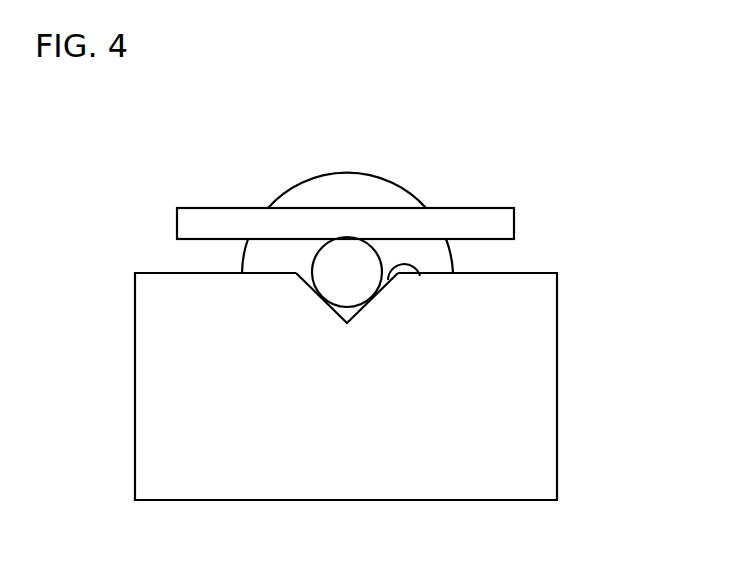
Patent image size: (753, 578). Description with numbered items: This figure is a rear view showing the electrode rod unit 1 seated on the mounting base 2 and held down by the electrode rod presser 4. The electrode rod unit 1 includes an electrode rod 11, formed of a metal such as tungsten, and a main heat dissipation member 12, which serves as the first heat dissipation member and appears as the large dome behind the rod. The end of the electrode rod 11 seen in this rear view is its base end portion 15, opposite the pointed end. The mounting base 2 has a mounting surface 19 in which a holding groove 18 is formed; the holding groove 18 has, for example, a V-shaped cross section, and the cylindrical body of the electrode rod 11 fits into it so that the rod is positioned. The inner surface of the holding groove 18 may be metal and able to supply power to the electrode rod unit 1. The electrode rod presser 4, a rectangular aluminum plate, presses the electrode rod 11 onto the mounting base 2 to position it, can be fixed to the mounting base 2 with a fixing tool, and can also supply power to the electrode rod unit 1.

The electrode rod unit 1 is at (347, 183).
The mounting base 2 is at (412, 408).
The electrode rod presser 4 is at (485, 207).
The electrode rod 11 is at (331, 259).
The main heat dissipation member 12 is at (345, 171).
The base end portion 15 is at (332, 283).
The holding groove 18 is at (420, 276).
The mounting surface 19 is at (209, 273).